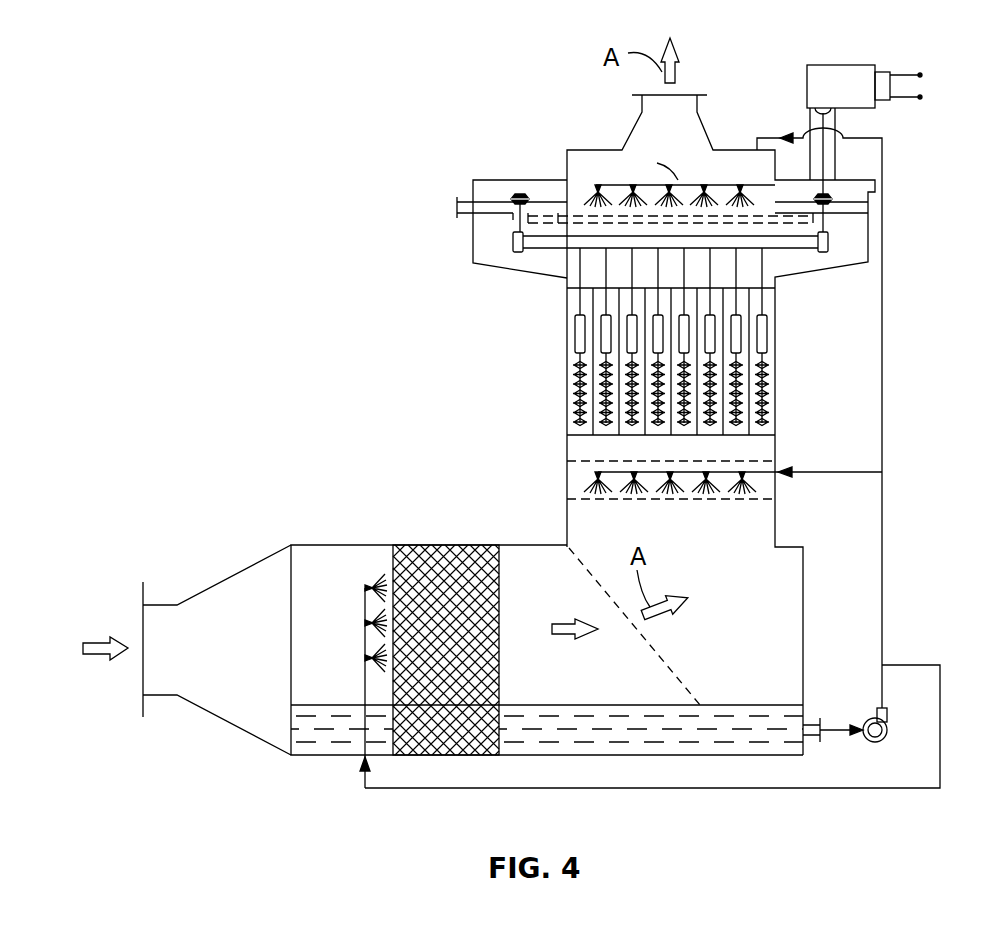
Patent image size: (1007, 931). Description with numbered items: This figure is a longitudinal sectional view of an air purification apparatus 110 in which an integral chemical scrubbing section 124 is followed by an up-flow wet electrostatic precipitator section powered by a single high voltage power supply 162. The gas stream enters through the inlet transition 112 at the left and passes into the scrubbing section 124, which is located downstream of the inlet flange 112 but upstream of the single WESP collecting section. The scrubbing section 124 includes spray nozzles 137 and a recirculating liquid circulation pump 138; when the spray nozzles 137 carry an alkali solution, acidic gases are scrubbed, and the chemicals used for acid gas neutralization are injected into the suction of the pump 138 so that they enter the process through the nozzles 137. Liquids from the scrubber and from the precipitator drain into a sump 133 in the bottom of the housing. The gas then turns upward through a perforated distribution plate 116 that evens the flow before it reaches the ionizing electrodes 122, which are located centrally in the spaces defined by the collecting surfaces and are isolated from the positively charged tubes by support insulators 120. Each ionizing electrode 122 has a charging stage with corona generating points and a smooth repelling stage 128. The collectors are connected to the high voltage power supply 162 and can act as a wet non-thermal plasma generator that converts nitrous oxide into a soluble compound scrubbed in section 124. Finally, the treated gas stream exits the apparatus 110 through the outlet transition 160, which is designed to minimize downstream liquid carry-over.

The apparatus 110 is at (298, 128).
The inlet transition 112 is at (143, 620).
The perforated distribution plate 116 is at (557, 215).
The support insulators 120 is at (833, 198).
The ionizing electrodes 122 is at (770, 372).
The chemical scrubbing section 124 is at (452, 755).
The smooth repelling stage 128 is at (770, 333).
The sump 133 is at (337, 738).
The spray nozzles 137 is at (778, 475).
The liquid circulation pump 138 is at (888, 728).
The outlet transition 160 is at (700, 95).
The high voltage power supply 162 is at (843, 65).